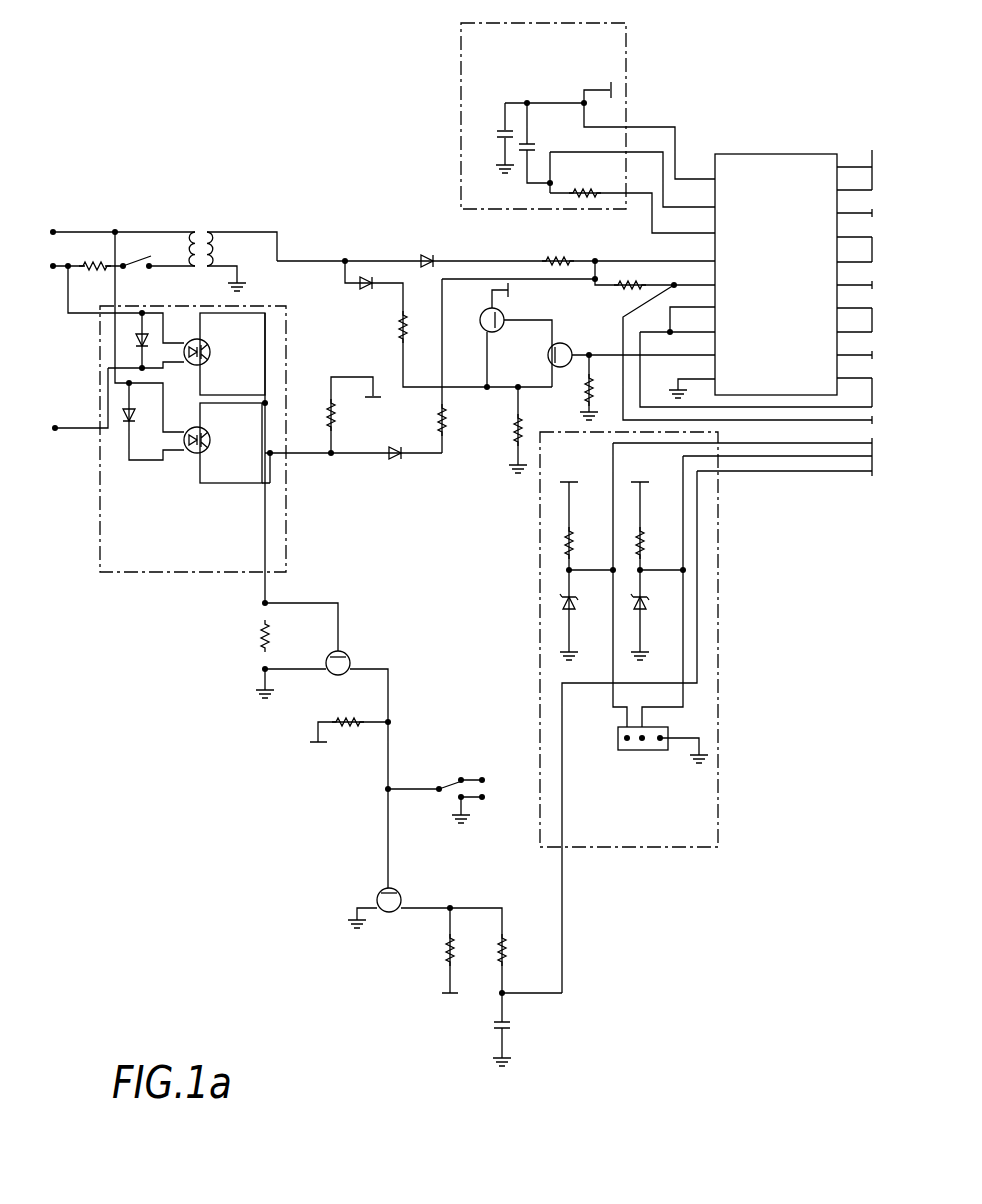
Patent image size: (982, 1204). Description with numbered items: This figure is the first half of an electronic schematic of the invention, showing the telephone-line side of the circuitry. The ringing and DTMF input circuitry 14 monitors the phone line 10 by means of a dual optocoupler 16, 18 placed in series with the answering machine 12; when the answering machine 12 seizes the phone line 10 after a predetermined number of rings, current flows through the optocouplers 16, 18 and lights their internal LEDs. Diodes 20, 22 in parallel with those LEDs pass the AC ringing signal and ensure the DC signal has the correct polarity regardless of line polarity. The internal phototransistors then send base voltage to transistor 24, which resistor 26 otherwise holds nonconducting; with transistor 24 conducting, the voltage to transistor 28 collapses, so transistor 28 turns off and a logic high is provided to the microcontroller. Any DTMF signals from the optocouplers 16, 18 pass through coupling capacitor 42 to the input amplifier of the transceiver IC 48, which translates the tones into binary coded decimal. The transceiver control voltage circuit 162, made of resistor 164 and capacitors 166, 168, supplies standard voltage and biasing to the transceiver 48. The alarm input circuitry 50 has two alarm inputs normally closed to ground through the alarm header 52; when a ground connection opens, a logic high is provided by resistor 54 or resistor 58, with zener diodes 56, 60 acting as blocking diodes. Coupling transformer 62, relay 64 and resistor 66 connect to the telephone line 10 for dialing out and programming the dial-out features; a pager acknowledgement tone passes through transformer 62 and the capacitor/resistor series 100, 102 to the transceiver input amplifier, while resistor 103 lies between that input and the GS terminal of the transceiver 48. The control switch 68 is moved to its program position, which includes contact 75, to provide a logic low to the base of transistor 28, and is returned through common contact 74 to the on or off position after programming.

The phone line 10 is at (46, 263).
The answering machine 12 is at (46, 456).
The ringing and DTMF input circuitry 14 is at (104, 576).
The optocoupler 16 is at (211, 351).
The optocoupler 18 is at (211, 439).
The diode 20 is at (134, 340).
The diode 22 is at (121, 417).
The transistor 24 is at (347, 653).
The resistor 26 is at (261, 636).
The transistor 28 is at (378, 891).
The coupling capacitor 42 is at (395, 461).
The transceiver IC 48 is at (787, 283).
The alarm input circuitry 50 is at (718, 690).
The alarm header 52 is at (618, 740).
The resistor 54 is at (642, 536).
The zener diode 56 is at (647, 605).
The resistor 58 is at (570, 536).
The zener diode 60 is at (576, 605).
The coupling transformer 62 is at (199, 232).
The relay 64 is at (144, 272).
The resistor 66 is at (98, 272).
The control switch 68 is at (453, 786).
The switch position 74 is at (464, 779).
The program position 75 is at (468, 800).
The capacitor 100 is at (427, 255).
The resistor 102 is at (558, 254).
The resistor 103 is at (632, 280).
The transceiver control voltage circuit 162 is at (626, 63).
The resistor 164 is at (589, 188).
The capacitor 166 is at (533, 148).
The capacitor 168 is at (497, 134).